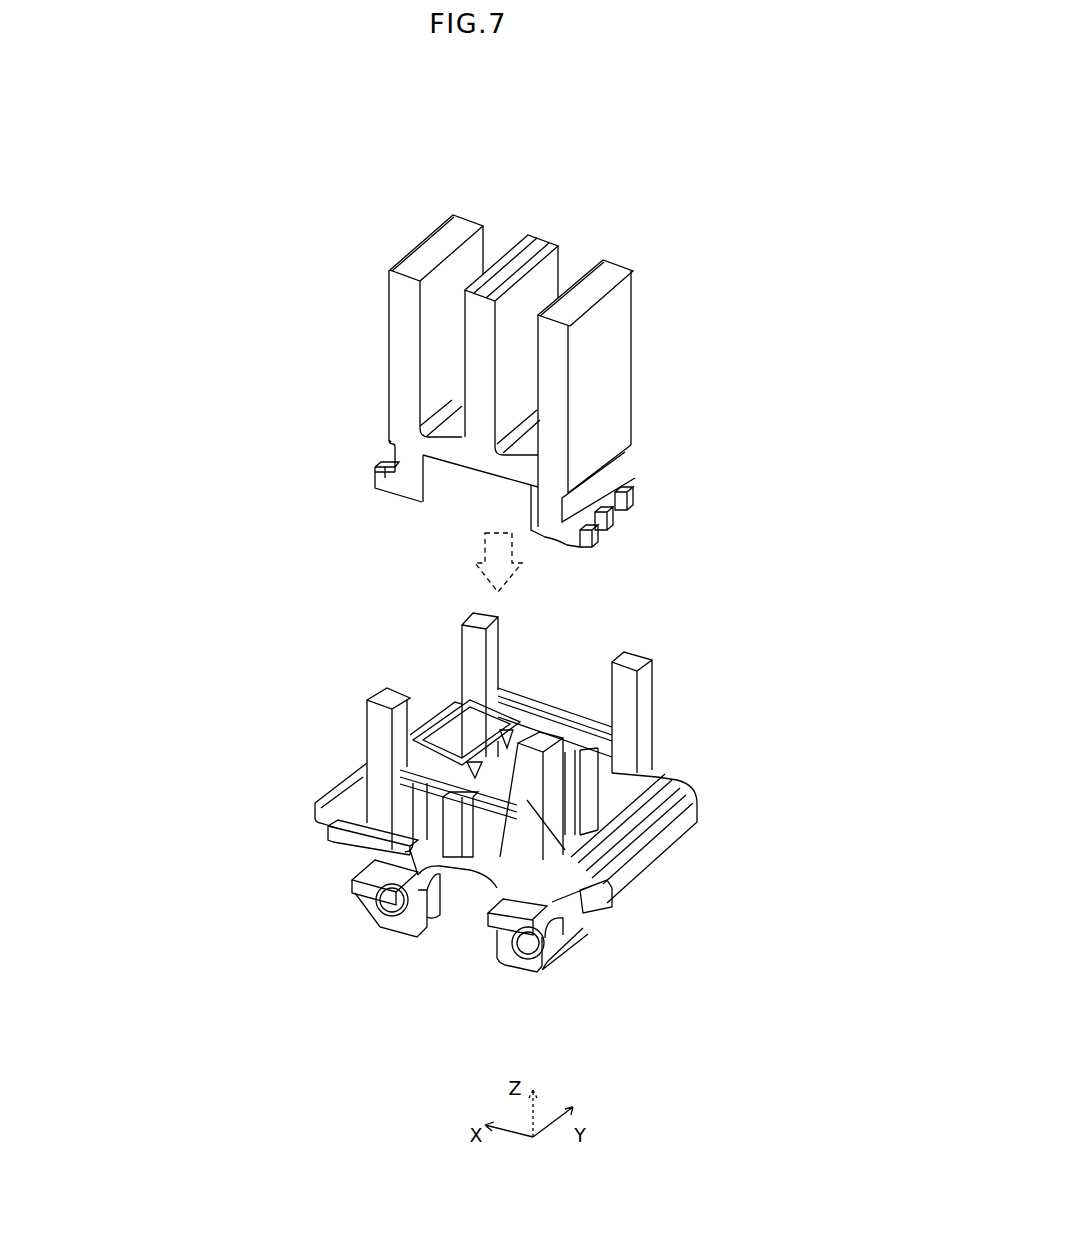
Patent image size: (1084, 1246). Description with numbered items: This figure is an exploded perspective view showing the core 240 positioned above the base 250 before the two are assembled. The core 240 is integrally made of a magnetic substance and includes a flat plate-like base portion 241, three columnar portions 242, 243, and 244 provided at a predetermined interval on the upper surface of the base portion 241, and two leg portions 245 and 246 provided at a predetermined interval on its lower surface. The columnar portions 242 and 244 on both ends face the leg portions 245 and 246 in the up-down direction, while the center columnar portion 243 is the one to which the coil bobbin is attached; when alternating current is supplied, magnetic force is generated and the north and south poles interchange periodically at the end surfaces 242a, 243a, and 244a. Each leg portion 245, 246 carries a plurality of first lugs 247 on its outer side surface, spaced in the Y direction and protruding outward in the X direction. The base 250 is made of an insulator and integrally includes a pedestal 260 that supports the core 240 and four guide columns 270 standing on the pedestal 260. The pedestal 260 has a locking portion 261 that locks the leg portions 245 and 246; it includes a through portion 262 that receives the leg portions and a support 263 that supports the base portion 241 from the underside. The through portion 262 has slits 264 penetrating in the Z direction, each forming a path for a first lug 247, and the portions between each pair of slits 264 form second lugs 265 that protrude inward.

The core 240 is at (516, 391).
The base portion 241 is at (488, 458).
The columnar portion 242 is at (396, 344).
The end surface 242a is at (432, 243).
The columnar portion 243 is at (542, 297).
The end surface 243a is at (530, 248).
The columnar portion 244 is at (600, 382).
The end surface 244a is at (605, 286).
The leg portion 245 is at (412, 463).
The leg portion 246 is at (602, 470).
The first lug 247 is at (378, 482).
The base 250 is at (497, 778).
The pedestal 260 is at (289, 817).
The locking portion 261 is at (378, 714).
The through portion 262 is at (432, 732).
The support 263 is at (452, 712).
The slit 264 is at (400, 745).
The second lug 265 is at (408, 752).
The guide column 270 is at (475, 642).